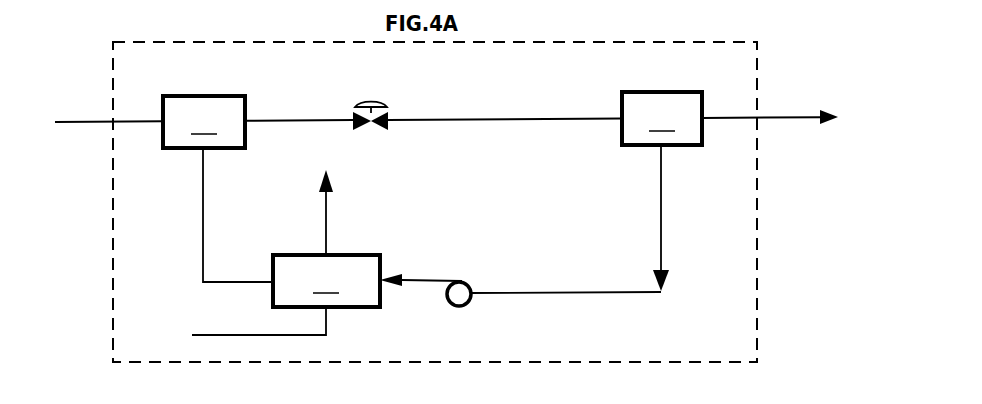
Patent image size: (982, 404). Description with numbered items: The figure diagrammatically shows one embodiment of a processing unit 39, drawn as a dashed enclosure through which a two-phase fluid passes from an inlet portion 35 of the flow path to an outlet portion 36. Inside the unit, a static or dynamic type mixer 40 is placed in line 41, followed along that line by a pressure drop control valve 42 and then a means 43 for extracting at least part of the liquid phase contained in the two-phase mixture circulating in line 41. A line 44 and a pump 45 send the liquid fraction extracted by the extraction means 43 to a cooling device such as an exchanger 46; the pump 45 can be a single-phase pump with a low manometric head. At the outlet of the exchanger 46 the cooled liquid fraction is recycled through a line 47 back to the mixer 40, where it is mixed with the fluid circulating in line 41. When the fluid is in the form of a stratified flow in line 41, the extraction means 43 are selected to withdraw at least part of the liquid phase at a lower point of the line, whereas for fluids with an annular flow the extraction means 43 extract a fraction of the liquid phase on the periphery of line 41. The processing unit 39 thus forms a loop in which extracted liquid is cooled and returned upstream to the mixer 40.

The inlet flow line 35 is at (79, 118).
The outlet flow line 36 is at (773, 122).
The processing unit 39 is at (768, 51).
The static or dynamic type mixer 40 is at (204, 122).
The line 41 is at (320, 119).
The pressure drop control valve 42 is at (388, 105).
The means for extracting liquid phase 43 is at (662, 118).
The line 44 is at (584, 292).
The pump 45 is at (471, 283).
The exchanger 46 is at (286, 252).
The line 47 is at (203, 203).